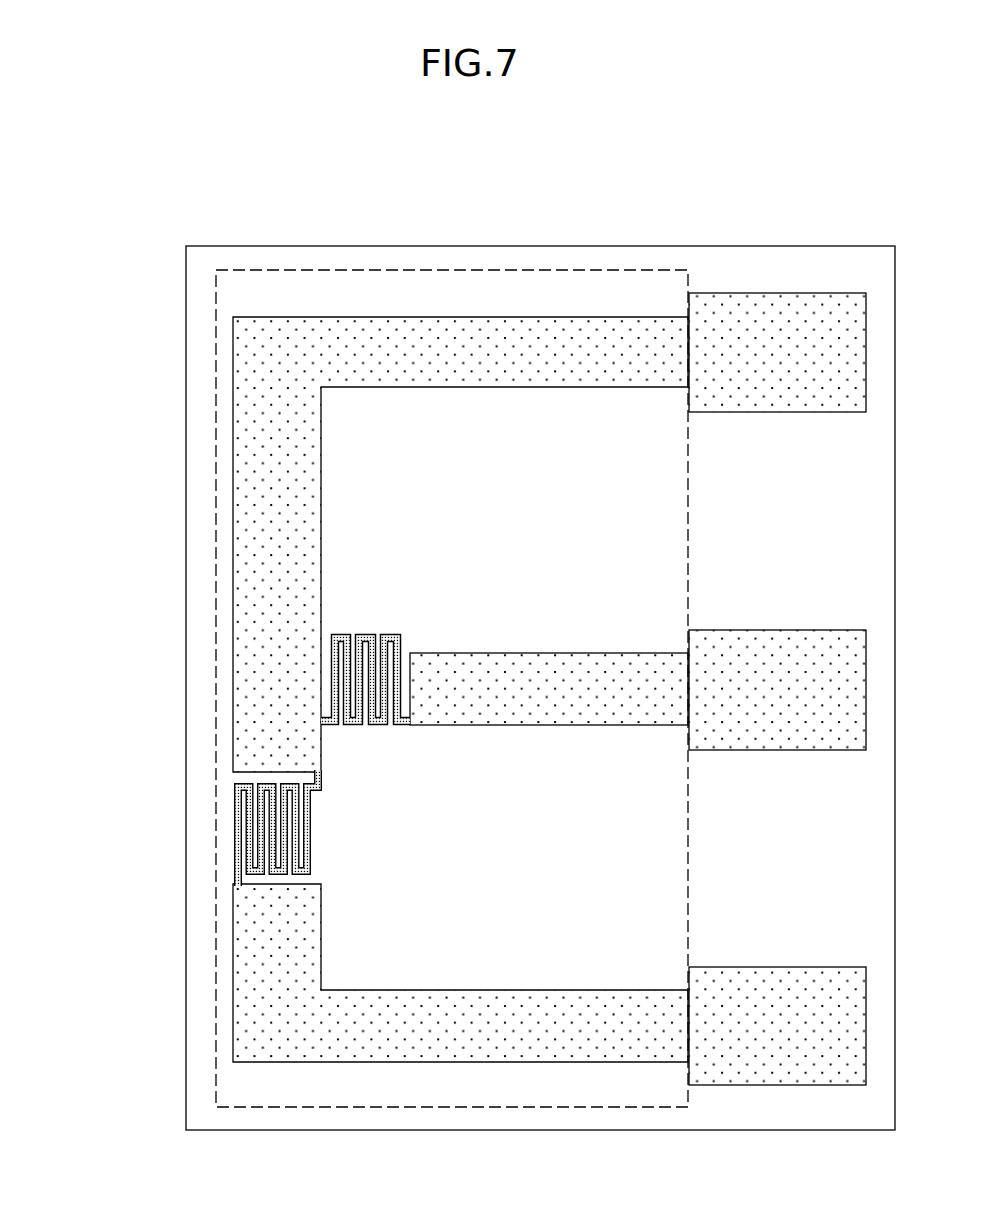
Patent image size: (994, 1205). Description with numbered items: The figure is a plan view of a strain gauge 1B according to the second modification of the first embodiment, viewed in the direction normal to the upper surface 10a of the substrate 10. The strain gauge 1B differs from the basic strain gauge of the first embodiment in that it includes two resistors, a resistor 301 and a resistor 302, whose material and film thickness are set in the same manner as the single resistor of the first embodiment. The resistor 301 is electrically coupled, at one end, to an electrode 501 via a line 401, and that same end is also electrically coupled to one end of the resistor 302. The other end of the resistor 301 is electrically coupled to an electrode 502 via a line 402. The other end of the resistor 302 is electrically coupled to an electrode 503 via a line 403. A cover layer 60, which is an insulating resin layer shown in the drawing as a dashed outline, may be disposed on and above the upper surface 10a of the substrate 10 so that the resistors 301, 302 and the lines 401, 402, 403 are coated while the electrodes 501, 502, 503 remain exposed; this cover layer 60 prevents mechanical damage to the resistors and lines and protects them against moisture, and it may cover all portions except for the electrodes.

The strain gauge 1B is at (84, 167).
The substrate 10 is at (397, 245).
The upper surface of substrate 10a is at (515, 262).
The cover layer 60 is at (452, 634).
The line 401 is at (540, 377).
The line 402 is at (540, 665).
The line 403 is at (541, 1000).
The resistor 301 is at (363, 635).
The resistor 302 is at (300, 873).
The electrode 501 is at (777, 397).
The electrode 502 is at (778, 645).
The electrode 503 is at (778, 980).